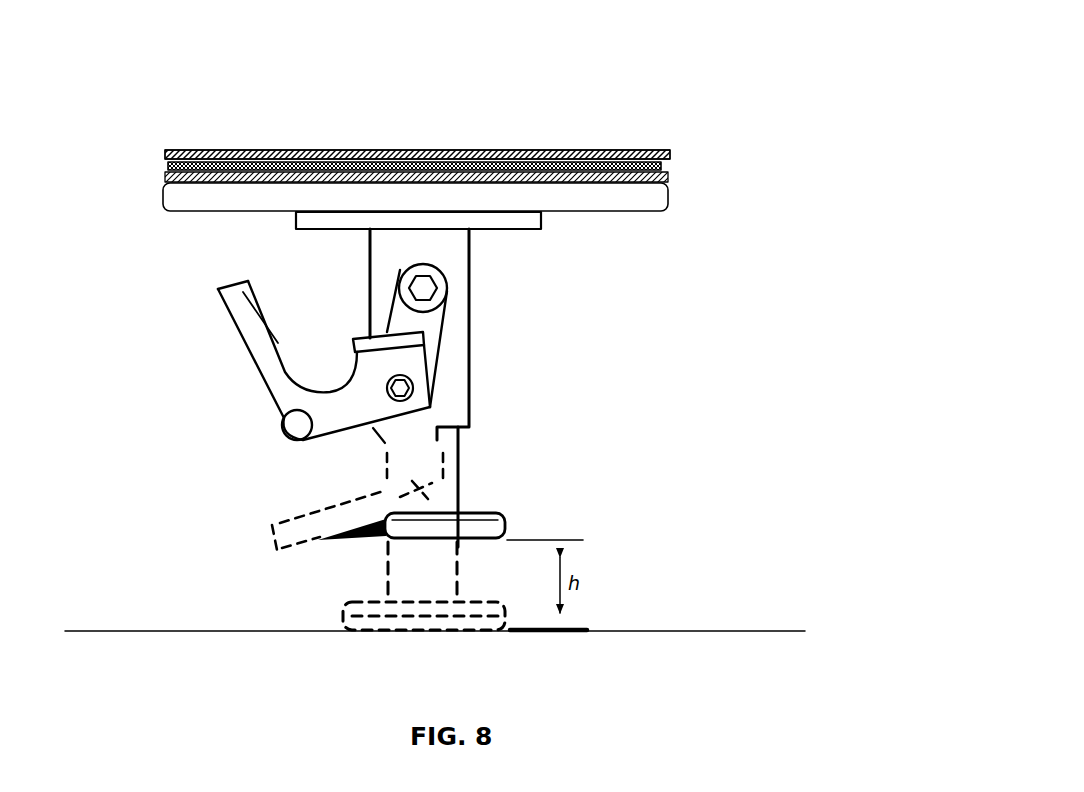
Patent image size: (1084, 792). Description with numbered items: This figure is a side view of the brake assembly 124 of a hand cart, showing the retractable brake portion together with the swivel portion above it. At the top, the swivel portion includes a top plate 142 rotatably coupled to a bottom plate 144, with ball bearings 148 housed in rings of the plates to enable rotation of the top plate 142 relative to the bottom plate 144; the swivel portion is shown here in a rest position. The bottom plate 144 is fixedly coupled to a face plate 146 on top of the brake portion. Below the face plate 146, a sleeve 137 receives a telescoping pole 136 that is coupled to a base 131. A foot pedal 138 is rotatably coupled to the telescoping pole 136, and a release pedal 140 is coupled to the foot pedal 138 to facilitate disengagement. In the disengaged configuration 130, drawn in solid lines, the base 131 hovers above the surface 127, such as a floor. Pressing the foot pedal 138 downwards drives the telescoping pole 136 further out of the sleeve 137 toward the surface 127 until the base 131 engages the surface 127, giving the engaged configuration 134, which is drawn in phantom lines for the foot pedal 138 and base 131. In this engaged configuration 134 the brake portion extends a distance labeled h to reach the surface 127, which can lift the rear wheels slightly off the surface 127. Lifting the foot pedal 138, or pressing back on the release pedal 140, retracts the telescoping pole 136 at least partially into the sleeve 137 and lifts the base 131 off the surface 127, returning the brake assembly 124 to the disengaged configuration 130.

The brake assembly 124 is at (612, 56).
The ball bearings 148 is at (158, 164).
The top plate 142 is at (352, 150).
The bottom plate 144 is at (668, 173).
The face plate 146 is at (668, 200).
The sleeve 137 is at (470, 285).
The release pedal 140 is at (355, 336).
The foot pedal 138 is at (222, 292).
The telescoping pole 136 is at (462, 452).
The disengaged configuration 130 is at (485, 483).
The base 131 is at (505, 515).
The engaged configuration 134 is at (348, 581).
The surface 127 is at (677, 630).